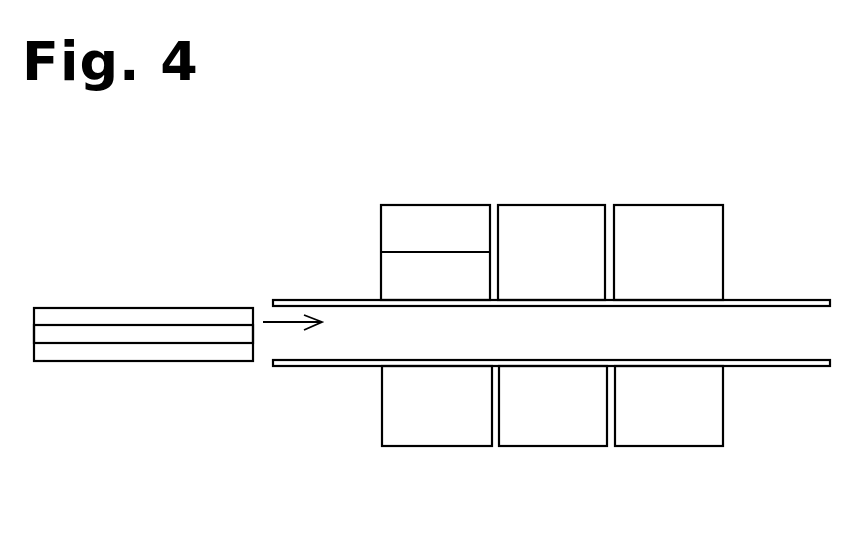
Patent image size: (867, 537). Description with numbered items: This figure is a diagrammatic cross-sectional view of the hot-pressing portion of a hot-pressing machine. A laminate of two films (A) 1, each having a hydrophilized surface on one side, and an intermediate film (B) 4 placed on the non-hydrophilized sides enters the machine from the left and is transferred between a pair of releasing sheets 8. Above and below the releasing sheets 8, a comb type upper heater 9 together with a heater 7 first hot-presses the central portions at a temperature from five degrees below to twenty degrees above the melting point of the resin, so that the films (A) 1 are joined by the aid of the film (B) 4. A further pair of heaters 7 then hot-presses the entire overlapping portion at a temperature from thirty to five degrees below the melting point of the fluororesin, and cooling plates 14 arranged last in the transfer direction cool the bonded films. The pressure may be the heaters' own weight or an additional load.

The film (A) 1 is at (172, 332).
The film (B) 4 is at (192, 313).
The heater 7 is at (540, 262).
The releasing sheet 8 is at (763, 297).
The comb type upper heater 9 is at (407, 262).
The cooling plate 14 is at (653, 262).